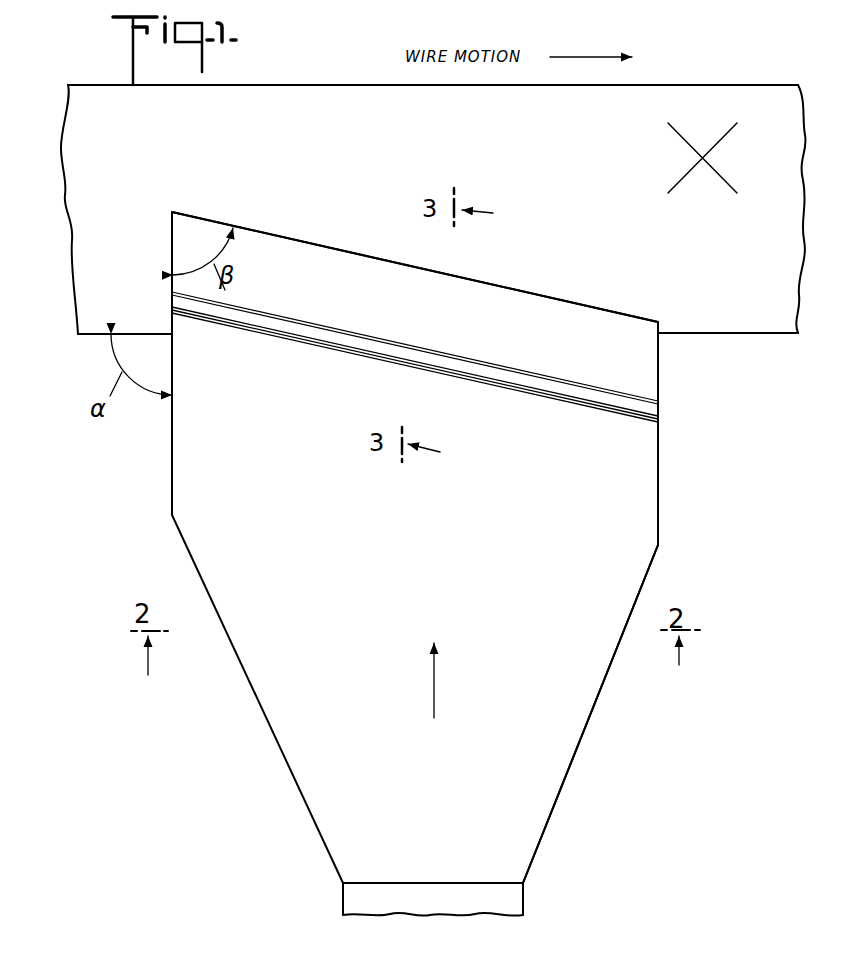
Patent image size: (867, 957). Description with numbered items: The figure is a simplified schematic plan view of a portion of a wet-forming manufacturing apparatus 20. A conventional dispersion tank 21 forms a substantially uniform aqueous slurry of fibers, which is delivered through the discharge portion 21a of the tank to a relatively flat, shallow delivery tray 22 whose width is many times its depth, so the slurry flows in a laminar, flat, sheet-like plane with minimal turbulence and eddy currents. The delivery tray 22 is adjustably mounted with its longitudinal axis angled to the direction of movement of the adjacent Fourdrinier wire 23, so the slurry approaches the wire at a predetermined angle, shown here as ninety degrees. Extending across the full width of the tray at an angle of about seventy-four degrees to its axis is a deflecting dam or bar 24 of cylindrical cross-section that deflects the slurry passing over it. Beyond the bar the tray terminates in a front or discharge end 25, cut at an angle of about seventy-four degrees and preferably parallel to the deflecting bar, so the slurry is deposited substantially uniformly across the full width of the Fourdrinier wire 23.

The wet-forming manufacturing apparatus 20 is at (150, 455).
The dispersion tank 21 is at (514, 908).
The discharge portion 21a is at (407, 883).
The delivery tray 22 is at (652, 567).
The Fourdrinier wire 23 is at (85, 238).
The deflecting dam or bar 24 is at (625, 419).
The front or discharge end 25 is at (514, 289).